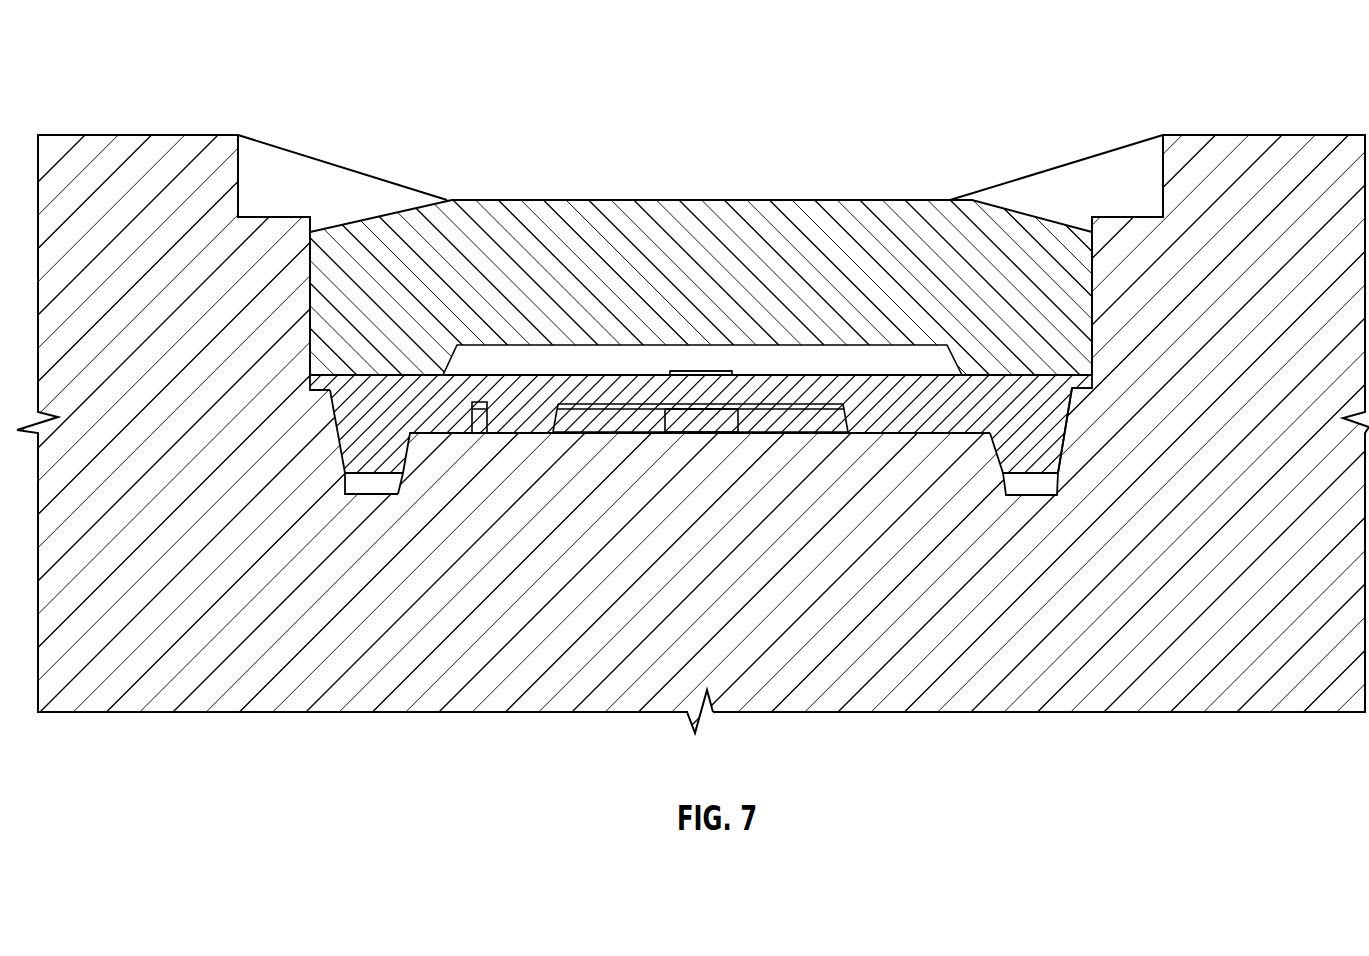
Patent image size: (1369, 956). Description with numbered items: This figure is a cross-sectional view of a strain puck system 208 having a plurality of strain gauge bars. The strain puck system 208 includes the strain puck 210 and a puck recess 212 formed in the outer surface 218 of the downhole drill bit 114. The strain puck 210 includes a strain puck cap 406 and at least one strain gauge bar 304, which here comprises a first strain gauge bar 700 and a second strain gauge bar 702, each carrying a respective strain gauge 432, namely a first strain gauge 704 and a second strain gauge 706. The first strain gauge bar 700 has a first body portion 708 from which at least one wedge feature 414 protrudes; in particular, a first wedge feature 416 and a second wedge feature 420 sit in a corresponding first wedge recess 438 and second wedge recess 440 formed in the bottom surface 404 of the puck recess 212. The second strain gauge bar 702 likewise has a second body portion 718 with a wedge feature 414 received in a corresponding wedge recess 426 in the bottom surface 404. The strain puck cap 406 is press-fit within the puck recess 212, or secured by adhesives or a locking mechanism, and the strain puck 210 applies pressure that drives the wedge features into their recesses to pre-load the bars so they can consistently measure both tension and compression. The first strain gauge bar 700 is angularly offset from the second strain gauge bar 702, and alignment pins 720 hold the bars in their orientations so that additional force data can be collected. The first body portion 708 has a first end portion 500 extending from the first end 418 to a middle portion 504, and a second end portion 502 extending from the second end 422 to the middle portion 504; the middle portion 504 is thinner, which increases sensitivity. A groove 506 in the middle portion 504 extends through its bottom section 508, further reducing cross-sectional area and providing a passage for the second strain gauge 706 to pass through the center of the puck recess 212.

The downhole drill bit 114 is at (1265, 157).
The strain puck system 208 is at (748, 118).
The strain puck 210 is at (888, 176).
The puck recess 212 is at (1097, 383).
The outer surface 218 is at (135, 134).
The strain gauge bar 304 is at (522, 388).
The bottom surface 404 is at (432, 435).
The strain puck cap 406 is at (838, 223).
The wedge feature 414 is at (338, 476).
The first wedge feature 416 is at (349, 468).
The first end 418 is at (330, 443).
The second wedge feature 420 is at (1045, 455).
The second end 422 is at (1072, 432).
The wedge recess 426 is at (386, 498).
The strain gauge 432 is at (725, 371).
The first wedge recess 438 is at (357, 498).
The second wedge recess 440 is at (1037, 497).
The first end portion 500 is at (398, 388).
The second end portion 502 is at (1022, 403).
The middle portion 504 is at (790, 390).
The groove 506 is at (853, 420).
The bottom section 508 is at (552, 421).
The first strain gauge bar 700 is at (600, 410).
The second strain gauge bar 702 is at (678, 422).
The first strain gauge 704 is at (688, 371).
The second strain gauge 706 is at (706, 409).
The first body portion 708 is at (895, 397).
The second body portion 718 is at (620, 421).
The alignment pins 720 is at (480, 412).